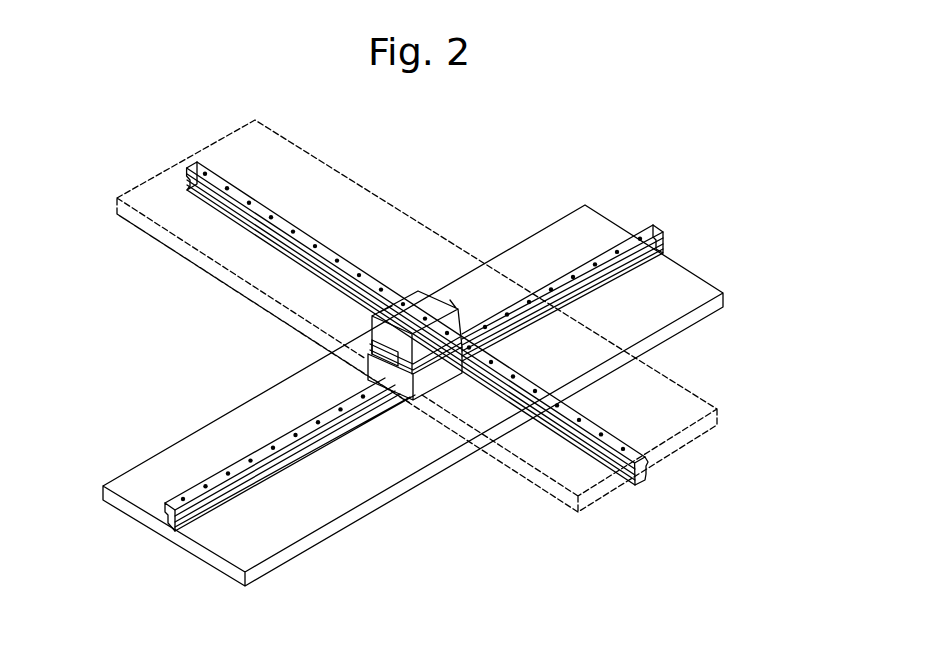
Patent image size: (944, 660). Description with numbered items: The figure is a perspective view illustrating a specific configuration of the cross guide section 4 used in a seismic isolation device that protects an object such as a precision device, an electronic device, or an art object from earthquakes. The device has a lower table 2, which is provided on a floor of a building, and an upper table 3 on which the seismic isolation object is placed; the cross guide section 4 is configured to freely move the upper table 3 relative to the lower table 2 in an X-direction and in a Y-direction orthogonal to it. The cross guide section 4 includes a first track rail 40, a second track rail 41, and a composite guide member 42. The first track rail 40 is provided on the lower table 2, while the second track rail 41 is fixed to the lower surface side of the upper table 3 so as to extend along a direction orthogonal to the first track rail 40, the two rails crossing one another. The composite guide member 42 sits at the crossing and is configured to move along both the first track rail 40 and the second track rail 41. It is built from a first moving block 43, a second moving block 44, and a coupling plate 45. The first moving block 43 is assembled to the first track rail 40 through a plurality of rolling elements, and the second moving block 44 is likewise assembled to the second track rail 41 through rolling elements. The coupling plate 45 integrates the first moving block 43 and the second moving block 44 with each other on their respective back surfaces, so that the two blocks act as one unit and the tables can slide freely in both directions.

The lower table 2 is at (529, 236).
The upper table 3 is at (701, 398).
The cross guide section 4 is at (286, 347).
The first track rail 40 is at (633, 230).
The second track rail 41 is at (572, 437).
The composite guide member 42 is at (408, 402).
The first moving block 43 is at (437, 376).
The second moving block 44 is at (398, 302).
The coupling plate 45 is at (368, 356).